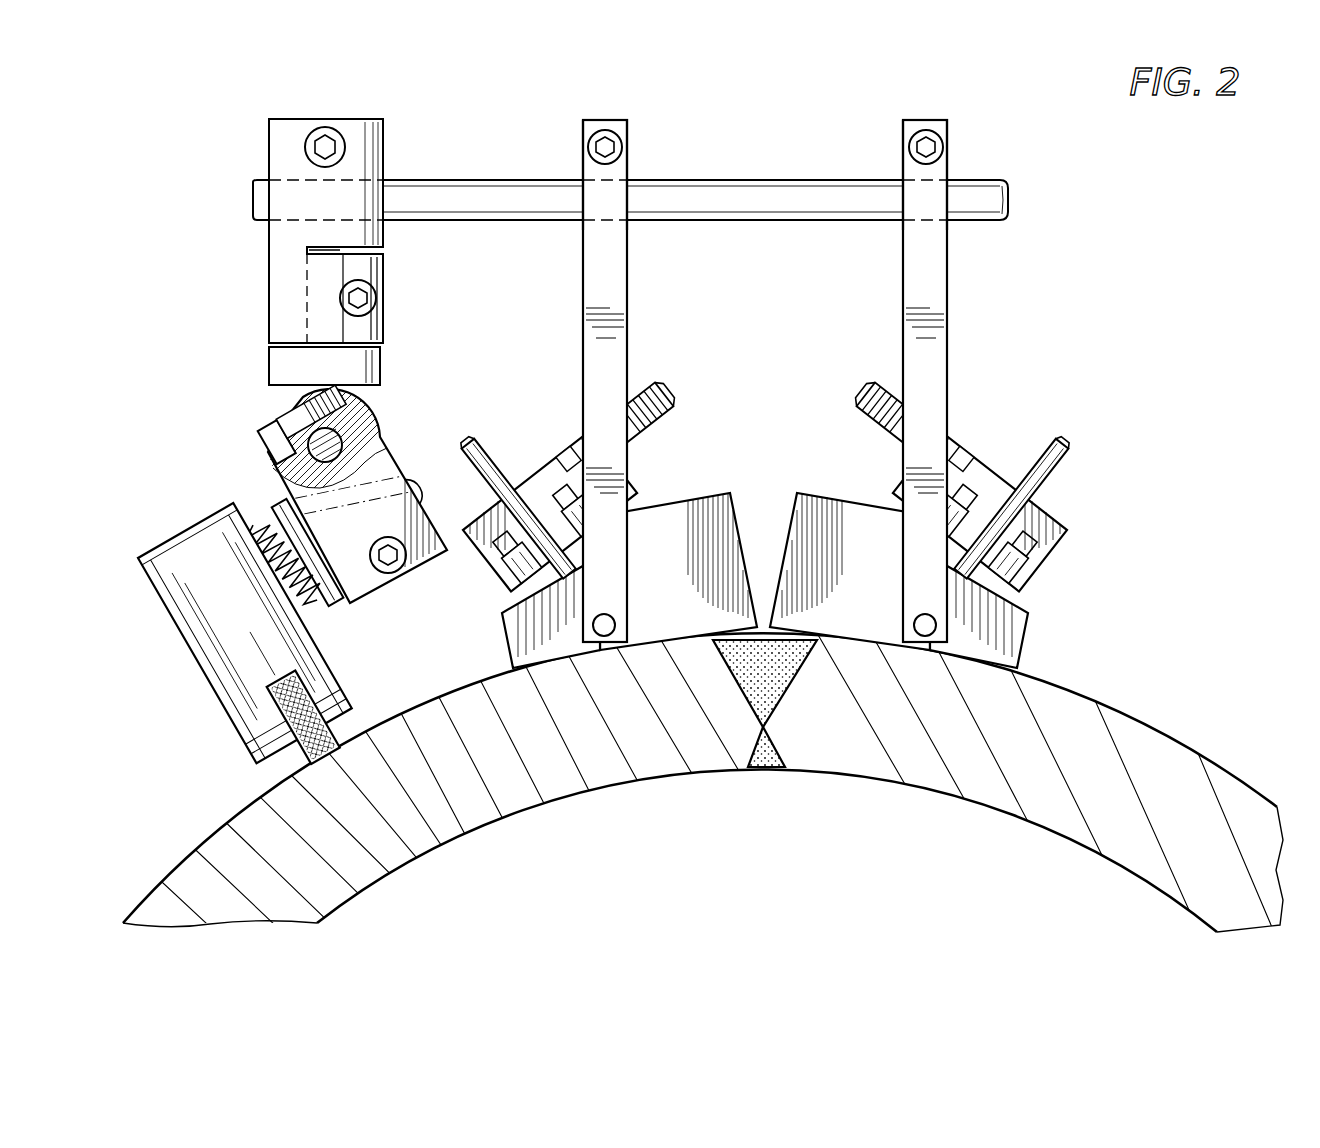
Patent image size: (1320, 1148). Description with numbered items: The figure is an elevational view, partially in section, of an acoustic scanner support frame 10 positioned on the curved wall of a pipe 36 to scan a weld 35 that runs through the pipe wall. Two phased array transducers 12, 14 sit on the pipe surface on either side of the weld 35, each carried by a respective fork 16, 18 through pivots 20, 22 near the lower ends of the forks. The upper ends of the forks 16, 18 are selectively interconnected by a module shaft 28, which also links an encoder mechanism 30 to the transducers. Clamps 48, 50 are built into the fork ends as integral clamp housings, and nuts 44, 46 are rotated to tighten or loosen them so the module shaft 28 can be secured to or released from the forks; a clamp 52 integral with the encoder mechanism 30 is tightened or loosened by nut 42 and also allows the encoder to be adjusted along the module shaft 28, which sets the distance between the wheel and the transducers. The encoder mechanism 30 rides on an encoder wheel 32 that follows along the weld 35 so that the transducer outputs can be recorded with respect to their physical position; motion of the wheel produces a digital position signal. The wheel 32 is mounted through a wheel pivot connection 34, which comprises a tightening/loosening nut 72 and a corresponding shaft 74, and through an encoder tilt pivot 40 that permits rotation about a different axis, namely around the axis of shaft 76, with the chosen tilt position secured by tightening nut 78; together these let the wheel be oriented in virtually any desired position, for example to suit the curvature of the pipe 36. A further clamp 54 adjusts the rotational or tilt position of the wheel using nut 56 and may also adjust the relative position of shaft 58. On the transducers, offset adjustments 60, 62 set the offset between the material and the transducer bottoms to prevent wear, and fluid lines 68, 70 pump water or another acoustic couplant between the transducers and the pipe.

The support frame 10 is at (633, 438).
The phased array transducer 12 is at (690, 514).
The phased array transducer 14 is at (820, 514).
The fork 16 is at (638, 374).
The fork 18 is at (959, 381).
The pivot 20 is at (592, 627).
The pivot 22 is at (937, 625).
The module shaft 28 is at (772, 195).
The encoder mechanism 30 is at (185, 548).
The encoder wheel 32 is at (300, 745).
The wheel pivot connection 34 is at (360, 335).
The weld 35 is at (766, 688).
The pipe 36 is at (1130, 750).
The tilt pivot 40 is at (372, 398).
The nut 42 is at (325, 127).
The nut 44 is at (605, 129).
The nut 46 is at (926, 129).
The clamp 48 is at (628, 160).
The clamp 50 is at (948, 176).
The clamp 52 is at (383, 150).
The clamp 54 is at (430, 552).
The nut 56 is at (388, 573).
The shaft 58 is at (343, 546).
The phased array transducer offset adjustment 60 is at (1020, 560).
The phased array transducer offset adjustment 62 is at (966, 490).
The fluid line 68 is at (484, 446).
The fluid line 70 is at (1066, 468).
The nut 72 is at (377, 298).
The shaft 74 is at (318, 292).
The shaft 76 is at (318, 456).
The nut 78 is at (260, 436).